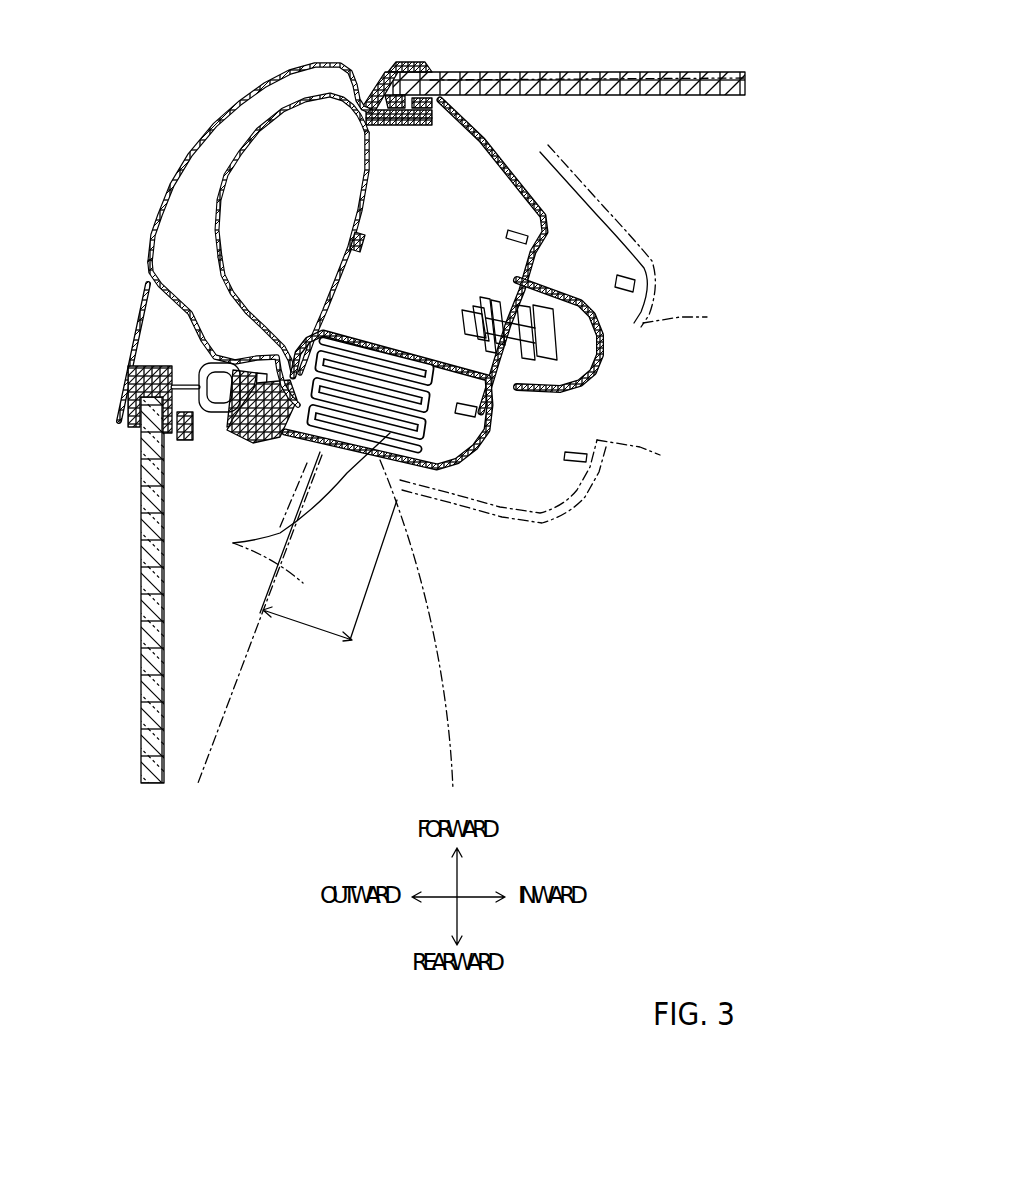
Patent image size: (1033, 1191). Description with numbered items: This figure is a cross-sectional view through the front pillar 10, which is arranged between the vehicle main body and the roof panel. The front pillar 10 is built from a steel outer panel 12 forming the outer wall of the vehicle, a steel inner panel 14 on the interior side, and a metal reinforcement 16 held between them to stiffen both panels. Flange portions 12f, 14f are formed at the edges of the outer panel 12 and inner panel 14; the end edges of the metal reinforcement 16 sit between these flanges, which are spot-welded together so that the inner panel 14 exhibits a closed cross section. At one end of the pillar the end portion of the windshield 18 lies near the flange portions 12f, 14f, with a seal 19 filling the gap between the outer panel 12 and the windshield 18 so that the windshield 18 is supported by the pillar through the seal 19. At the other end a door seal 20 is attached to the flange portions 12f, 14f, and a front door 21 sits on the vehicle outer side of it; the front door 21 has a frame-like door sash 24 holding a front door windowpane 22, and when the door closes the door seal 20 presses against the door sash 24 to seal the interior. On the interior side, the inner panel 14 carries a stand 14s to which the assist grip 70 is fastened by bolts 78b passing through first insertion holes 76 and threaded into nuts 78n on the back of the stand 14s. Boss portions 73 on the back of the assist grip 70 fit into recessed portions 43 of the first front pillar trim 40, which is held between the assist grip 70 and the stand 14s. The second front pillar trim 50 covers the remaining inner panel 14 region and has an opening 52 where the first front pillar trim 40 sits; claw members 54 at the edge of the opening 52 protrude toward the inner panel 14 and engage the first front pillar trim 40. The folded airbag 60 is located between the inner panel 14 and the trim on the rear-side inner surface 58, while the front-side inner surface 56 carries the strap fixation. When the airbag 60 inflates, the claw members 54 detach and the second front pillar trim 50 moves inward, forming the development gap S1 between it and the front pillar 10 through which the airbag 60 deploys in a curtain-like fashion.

The front pillar 10 is at (260, 217).
The outer panel 12 is at (257, 97).
The flange portion 12f is at (403, 108).
The inner panel 14 is at (351, 253).
The flange portion 14f is at (407, 128).
The stand 14s is at (364, 243).
The metal reinforcement 16 is at (247, 170).
The windshield 18 is at (553, 80).
The seal 19 is at (383, 60).
The door seal 20 is at (258, 413).
The front door 21 is at (111, 533).
The front door windowpane 22 is at (150, 517).
The door sash 24 is at (127, 397).
The first front pillar trim 40 is at (540, 328).
The recessed portion 43 is at (486, 297).
The second front pillar trim 50 is at (397, 476).
The opening 52 is at (523, 275).
The claw member 54 is at (540, 220).
The inner surface 56 is at (557, 168).
The inner surface 58 is at (382, 418).
The airbag 60 is at (325, 611).
The assist grip 70 is at (522, 342).
The boss portion 73 is at (482, 318).
The first insertion hole 76 is at (547, 372).
The bolt 78b is at (556, 372).
The nut 78n is at (466, 322).
The development gap S1 is at (328, 553).